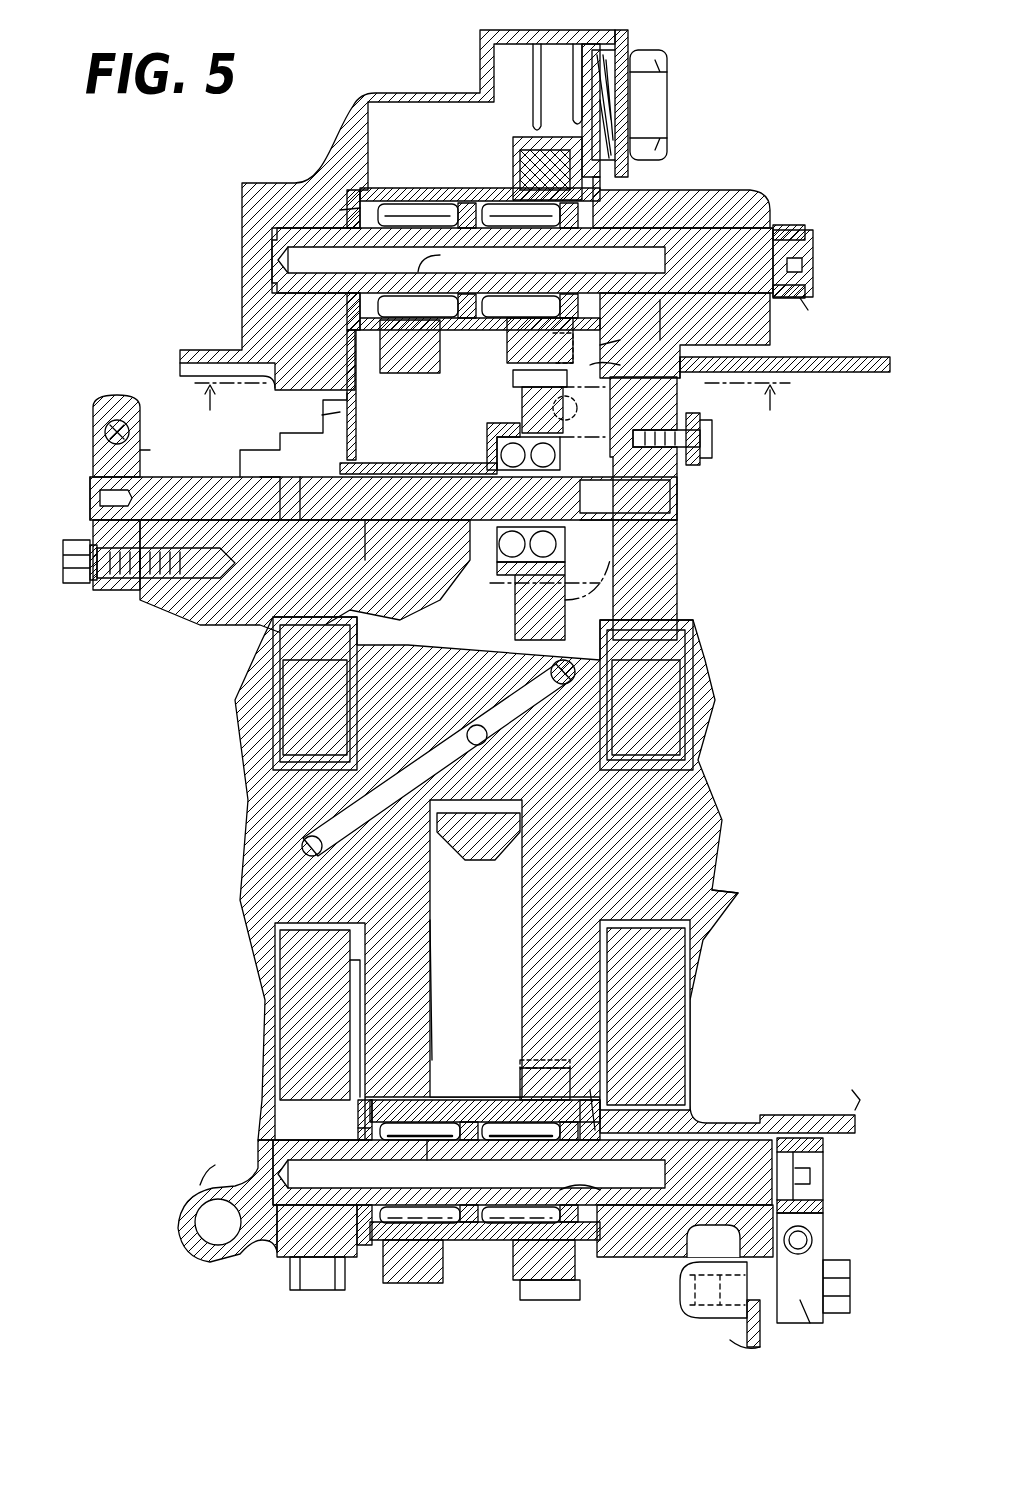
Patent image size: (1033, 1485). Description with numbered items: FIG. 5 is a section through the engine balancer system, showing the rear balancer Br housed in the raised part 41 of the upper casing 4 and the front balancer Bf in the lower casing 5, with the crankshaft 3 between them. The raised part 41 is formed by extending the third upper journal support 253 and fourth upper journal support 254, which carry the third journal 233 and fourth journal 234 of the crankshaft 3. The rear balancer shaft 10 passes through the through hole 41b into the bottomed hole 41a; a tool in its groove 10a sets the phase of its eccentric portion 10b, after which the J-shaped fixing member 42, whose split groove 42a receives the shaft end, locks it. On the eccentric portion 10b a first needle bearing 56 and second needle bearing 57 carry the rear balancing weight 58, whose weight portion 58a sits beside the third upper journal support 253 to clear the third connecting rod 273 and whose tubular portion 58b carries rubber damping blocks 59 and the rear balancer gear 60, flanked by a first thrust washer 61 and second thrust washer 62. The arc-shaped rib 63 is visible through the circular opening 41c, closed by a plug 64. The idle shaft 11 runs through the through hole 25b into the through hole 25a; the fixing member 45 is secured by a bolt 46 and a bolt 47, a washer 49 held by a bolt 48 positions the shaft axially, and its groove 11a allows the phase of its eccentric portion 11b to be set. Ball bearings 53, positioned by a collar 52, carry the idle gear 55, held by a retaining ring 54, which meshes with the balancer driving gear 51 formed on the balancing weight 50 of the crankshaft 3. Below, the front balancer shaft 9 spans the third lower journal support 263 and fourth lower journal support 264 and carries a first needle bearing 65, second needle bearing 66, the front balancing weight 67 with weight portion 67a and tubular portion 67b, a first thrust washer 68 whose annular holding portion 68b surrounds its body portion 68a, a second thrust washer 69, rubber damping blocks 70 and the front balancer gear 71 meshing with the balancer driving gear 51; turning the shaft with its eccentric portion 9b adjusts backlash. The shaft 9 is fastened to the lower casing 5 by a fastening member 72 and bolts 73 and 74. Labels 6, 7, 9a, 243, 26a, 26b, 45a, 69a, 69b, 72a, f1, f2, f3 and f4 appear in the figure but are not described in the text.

The crankshaft 3 is at (738, 798).
The upper casing 4 is at (865, 362).
The lower casing 5 is at (245, 1262).
The shaft end 6 is at (845, 263).
The section line 7 is at (489, 403).
The front balancer shaft 9 is at (728, 1182).
The shaft flange 9a is at (835, 1137).
The eccentric portion 9b is at (368, 1255).
The rear balancer shaft 10 is at (748, 272).
The groove 10a is at (805, 255).
The eccentric portion 10b is at (422, 268).
The idle shaft 11 is at (395, 501).
The groove 11a is at (92, 480).
The eccentric portion 11b is at (408, 540).
The third journal 233 is at (260, 935).
The fourth journal 234 is at (722, 890).
The case rib 243 is at (480, 860).
The third upper journal support 253 is at (215, 705).
The fourth upper journal support 254 is at (735, 190).
The through hole 25a is at (345, 540).
The through hole 25b is at (678, 535).
The third lower journal support 263 is at (290, 1020).
The fourth lower journal support 264 is at (695, 1010).
The shaft bore 26a is at (305, 1190).
The shaft bore 26b is at (575, 1180).
The third connecting rod 273 is at (450, 990).
The raised part 41 is at (330, 170).
The bottomed hole 41a is at (320, 270).
The through hole 41b is at (690, 310).
The circular opening 41c is at (622, 55).
The fixing member 42 is at (800, 222).
The split groove 42a is at (816, 319).
The fixing member 45 is at (118, 600).
The bracket portion 45a is at (148, 448).
The bolt 46 is at (118, 425).
The bolt 47 is at (78, 590).
The bolt 48 is at (705, 460).
The washer 49 is at (700, 415).
The balancing weight 50 is at (528, 945).
The balancer driving gear 51 is at (500, 600).
The collar 52 is at (388, 462).
The ball bearings 53 is at (510, 438).
The retaining ring 54 is at (487, 432).
The idle gear 55 is at (513, 378).
The first needle bearing 56 is at (416, 208).
The second needle bearing 57 is at (500, 208).
The rear balancing weight 58 is at (462, 190).
The weight portion 58a is at (380, 392).
The tubular portion 58b is at (507, 338).
The rubber damping blocks 59 is at (528, 160).
The rear balancer gear 60 is at (548, 145).
The first thrust washer 61 is at (363, 190).
The second thrust washer 62 is at (630, 190).
The rib 63 is at (548, 95).
The plug 64 is at (657, 93).
The first needle bearing 65 is at (395, 1122).
The second needle bearing 66 is at (490, 1125).
The front balancing weight 67 is at (447, 1250).
The weight portion 67a is at (405, 1275).
The tubular portion 67b is at (490, 1238).
The first thrust washer 68 is at (355, 1112).
The body portion 68a is at (356, 1128).
The annular holding portion 68b is at (374, 1108).
The second thrust washer 69 is at (590, 1125).
The ring portion 69a is at (608, 1260).
The ring portion 69b is at (592, 1095).
The rubber damping blocks 70 is at (530, 1065).
The front balancer gear 71 is at (555, 1295).
The fastening member 72 is at (830, 1222).
The bracket portion 72a is at (812, 1325).
The bolt 73 is at (815, 1237).
The bolt 74 is at (850, 1290).
The rear balancer Br is at (455, 128).
The front balancer Bf is at (452, 1070).
The force f1 is at (332, 279).
The force f2 is at (626, 331).
The force f3 is at (317, 411).
The force f4 is at (633, 361).